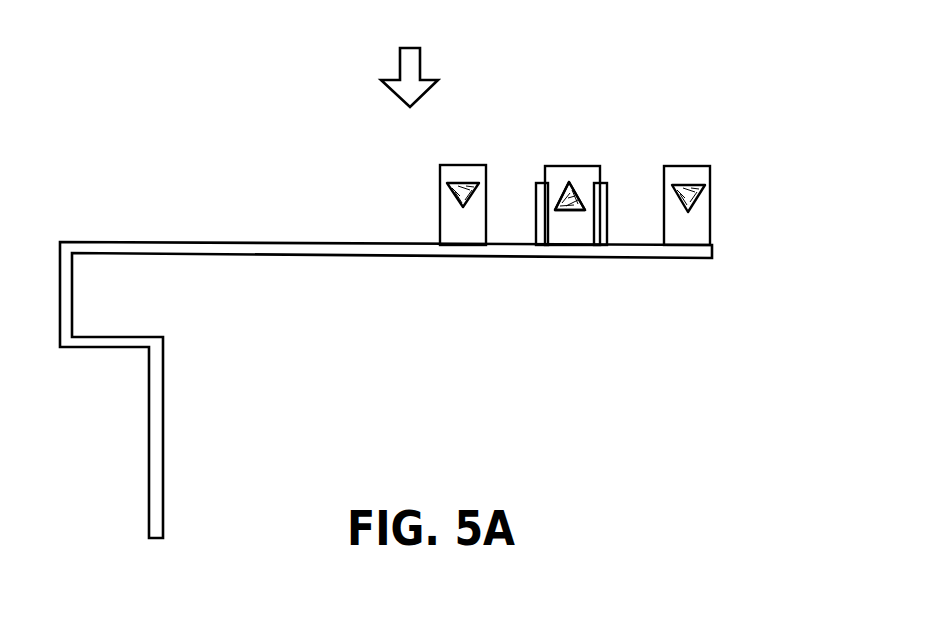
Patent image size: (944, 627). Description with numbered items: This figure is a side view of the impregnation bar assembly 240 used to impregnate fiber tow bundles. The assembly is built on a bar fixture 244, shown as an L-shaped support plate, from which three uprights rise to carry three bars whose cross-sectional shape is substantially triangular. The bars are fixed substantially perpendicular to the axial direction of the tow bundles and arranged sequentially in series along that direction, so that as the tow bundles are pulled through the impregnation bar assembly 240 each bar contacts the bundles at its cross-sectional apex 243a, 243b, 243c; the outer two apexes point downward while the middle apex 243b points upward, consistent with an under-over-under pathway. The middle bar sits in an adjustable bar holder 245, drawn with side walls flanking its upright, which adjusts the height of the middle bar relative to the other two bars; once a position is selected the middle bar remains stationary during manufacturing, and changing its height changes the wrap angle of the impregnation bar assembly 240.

The impregnation bar assembly 240 is at (409, 60).
The cross-sectional apex 243a is at (461, 182).
The cross-sectional apex 243b is at (575, 183).
The cross-sectional apex 243c is at (702, 184).
The bar fixture 244 is at (230, 255).
The adjustable bar holder 245 is at (556, 165).